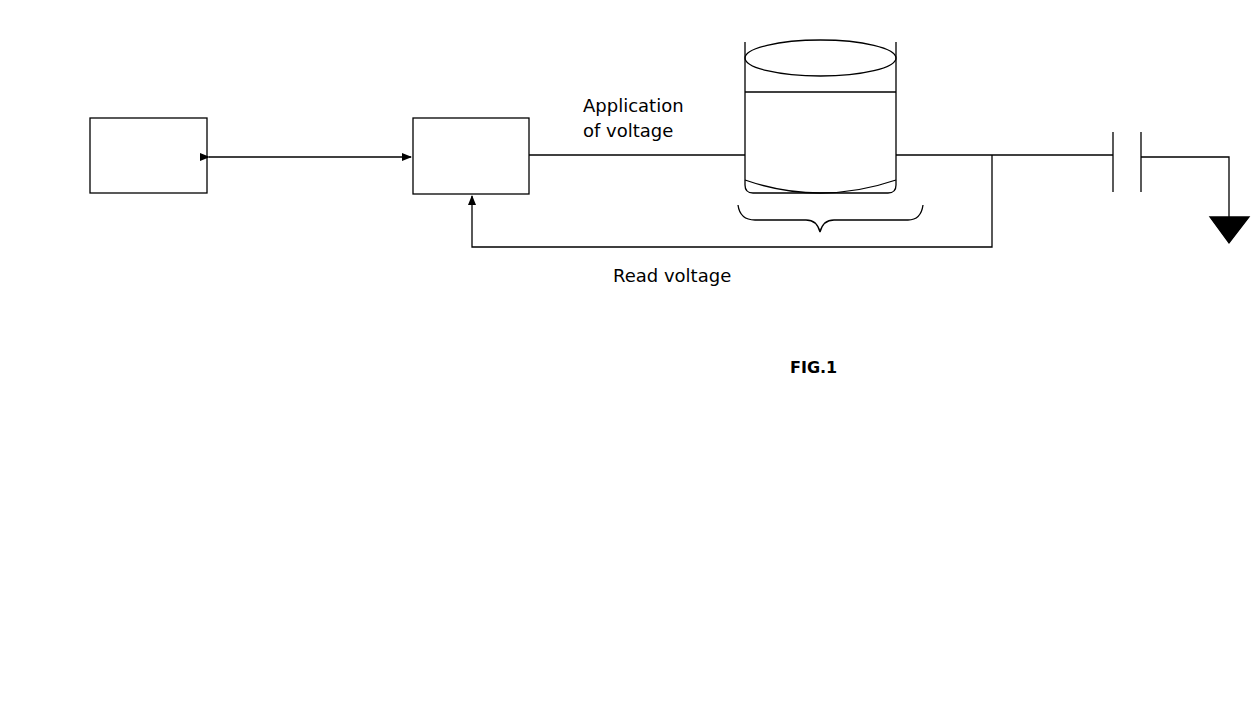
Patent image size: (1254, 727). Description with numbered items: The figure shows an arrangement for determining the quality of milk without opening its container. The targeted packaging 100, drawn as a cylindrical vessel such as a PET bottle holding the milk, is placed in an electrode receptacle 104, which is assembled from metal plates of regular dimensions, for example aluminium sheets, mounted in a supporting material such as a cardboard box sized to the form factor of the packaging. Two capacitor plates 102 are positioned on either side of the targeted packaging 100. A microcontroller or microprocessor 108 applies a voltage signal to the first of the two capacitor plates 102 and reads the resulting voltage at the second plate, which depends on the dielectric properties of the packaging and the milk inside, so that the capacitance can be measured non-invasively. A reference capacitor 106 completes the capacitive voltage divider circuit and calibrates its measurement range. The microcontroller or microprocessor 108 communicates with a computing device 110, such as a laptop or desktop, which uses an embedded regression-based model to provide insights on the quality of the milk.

The targeted packaging 100 is at (805, 138).
The two capacitor plates 102 is at (896, 92).
The electrode receptacle 104 is at (868, 233).
The reference capacitor 106 is at (1113, 185).
The microcontroller or microprocessor 108 is at (456, 168).
The computing device 110 is at (133, 168).